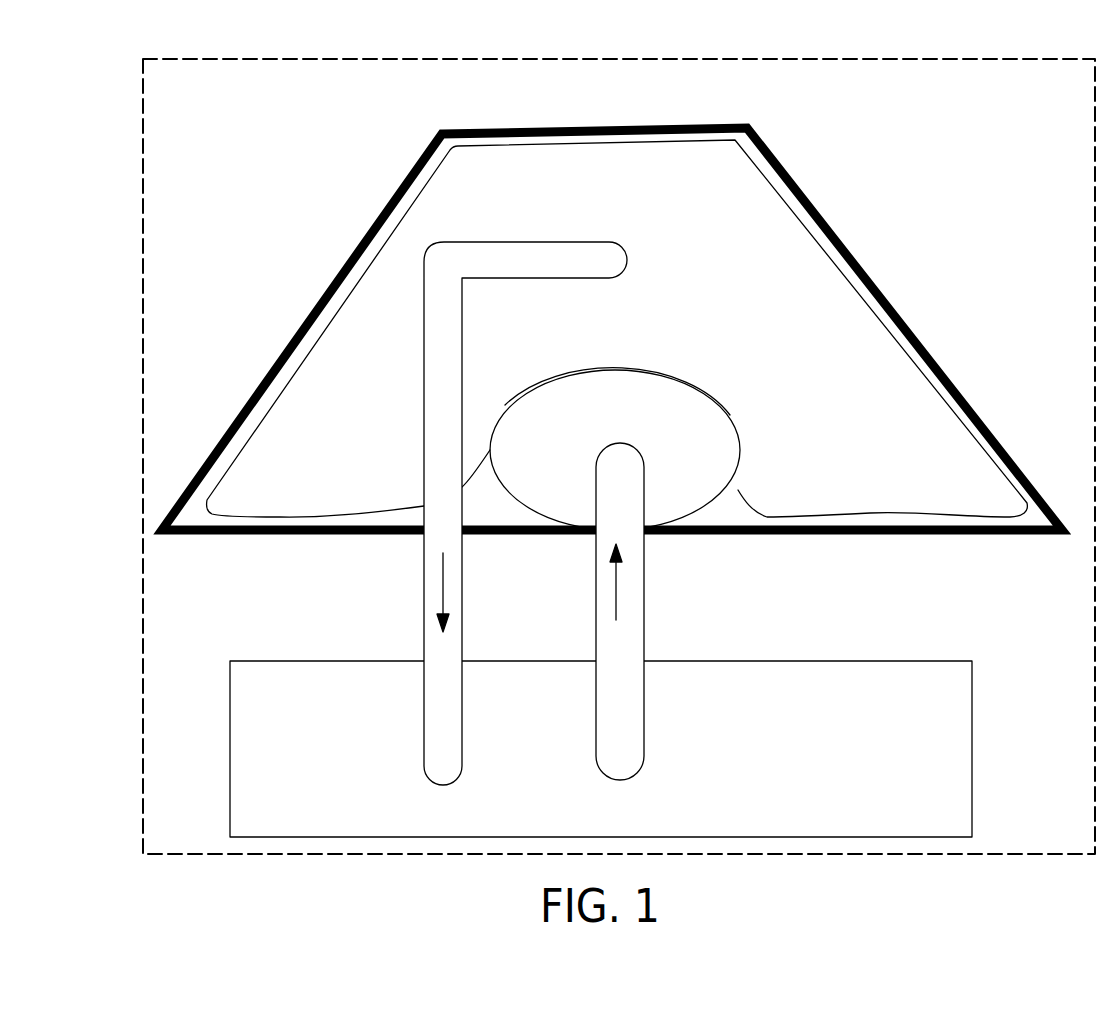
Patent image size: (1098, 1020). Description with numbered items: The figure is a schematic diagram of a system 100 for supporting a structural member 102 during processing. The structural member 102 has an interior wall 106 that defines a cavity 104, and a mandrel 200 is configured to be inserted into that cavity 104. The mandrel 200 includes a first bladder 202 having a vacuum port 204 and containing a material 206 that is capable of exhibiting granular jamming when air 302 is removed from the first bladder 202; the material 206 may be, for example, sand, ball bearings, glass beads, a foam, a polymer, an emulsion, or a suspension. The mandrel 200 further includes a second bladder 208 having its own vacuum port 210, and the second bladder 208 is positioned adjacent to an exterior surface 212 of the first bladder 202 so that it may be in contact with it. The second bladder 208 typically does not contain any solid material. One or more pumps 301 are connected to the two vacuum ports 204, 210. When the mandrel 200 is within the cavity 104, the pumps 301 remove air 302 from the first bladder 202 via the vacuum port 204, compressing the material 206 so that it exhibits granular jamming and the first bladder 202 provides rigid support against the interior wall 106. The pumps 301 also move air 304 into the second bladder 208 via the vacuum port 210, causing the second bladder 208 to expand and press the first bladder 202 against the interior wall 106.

The system 100 is at (990, 59).
The structural member 102 is at (442, 132).
The cavity 104 is at (734, 506).
The interior wall 106 is at (708, 523).
The mandrel 200 is at (791, 242).
The first bladder 202 is at (275, 516).
The vacuum port 204 is at (620, 242).
The material 206 is at (843, 405).
The second bladder 208 is at (505, 478).
The vacuum port 210 is at (615, 443).
The exterior surface 212 is at (479, 504).
The pumps 301 is at (601, 749).
The air 302 is at (442, 577).
The air 304 is at (616, 592).